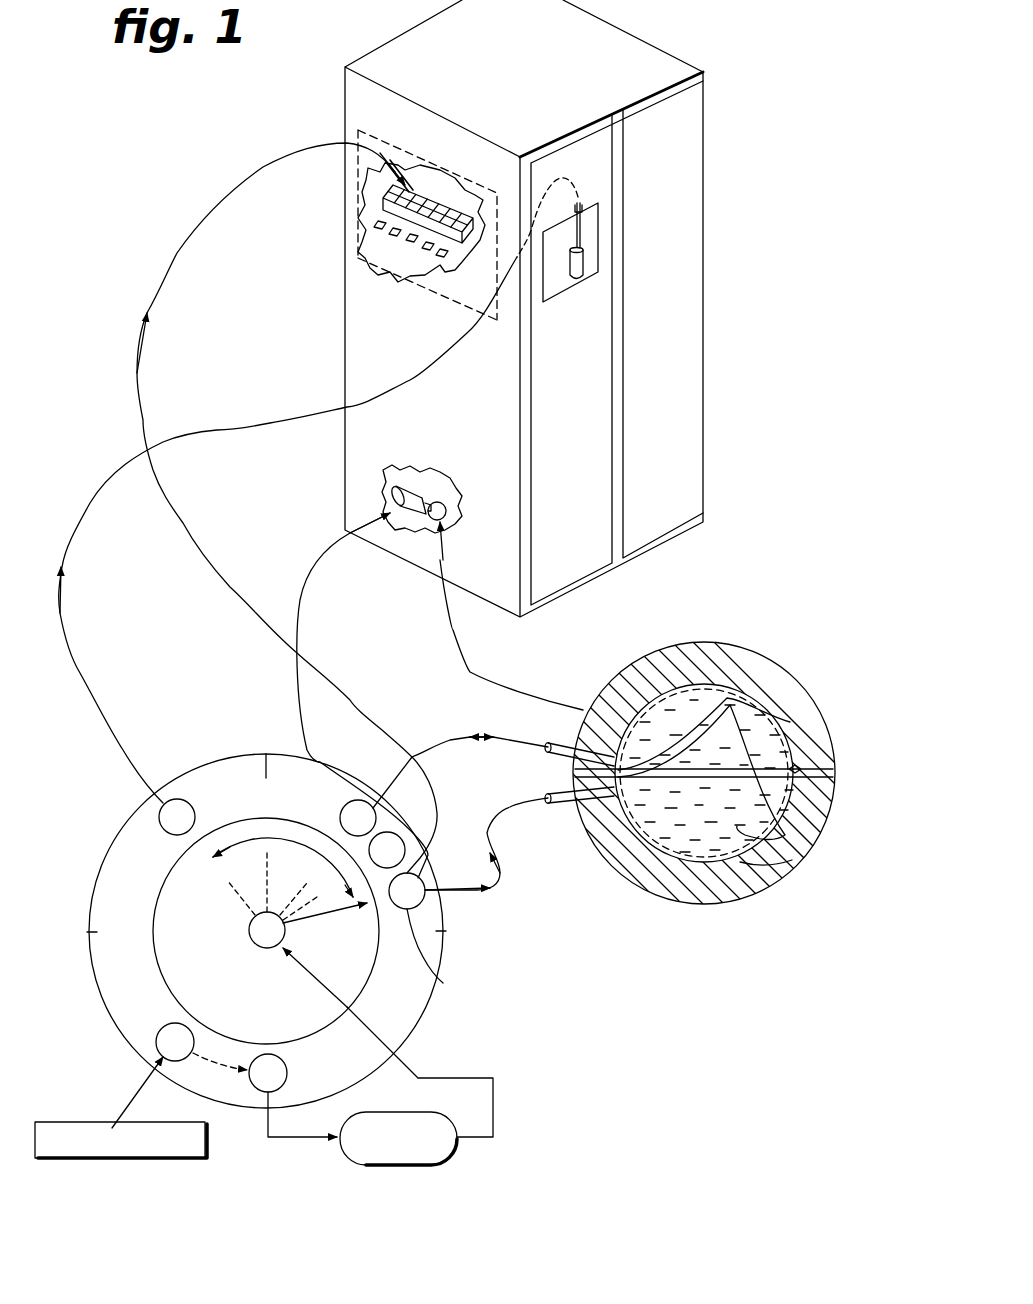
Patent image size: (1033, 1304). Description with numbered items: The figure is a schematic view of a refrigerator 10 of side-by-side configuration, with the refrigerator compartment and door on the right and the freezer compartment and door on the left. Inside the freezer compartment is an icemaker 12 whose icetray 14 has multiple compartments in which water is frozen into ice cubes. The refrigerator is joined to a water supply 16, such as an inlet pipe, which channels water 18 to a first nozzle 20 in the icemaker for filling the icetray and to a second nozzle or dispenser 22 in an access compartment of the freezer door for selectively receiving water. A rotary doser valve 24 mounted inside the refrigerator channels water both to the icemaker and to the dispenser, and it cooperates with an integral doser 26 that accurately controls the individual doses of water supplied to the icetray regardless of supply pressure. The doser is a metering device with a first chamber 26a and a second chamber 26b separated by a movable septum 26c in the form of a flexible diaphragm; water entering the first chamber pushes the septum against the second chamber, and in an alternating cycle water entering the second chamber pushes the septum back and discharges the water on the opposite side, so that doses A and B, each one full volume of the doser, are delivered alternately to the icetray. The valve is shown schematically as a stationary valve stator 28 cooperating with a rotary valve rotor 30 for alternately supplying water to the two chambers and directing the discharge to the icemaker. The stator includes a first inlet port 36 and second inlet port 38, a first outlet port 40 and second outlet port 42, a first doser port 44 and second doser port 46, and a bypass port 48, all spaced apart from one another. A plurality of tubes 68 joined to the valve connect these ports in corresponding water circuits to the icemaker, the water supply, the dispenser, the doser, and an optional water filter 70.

The refrigerator 10 is at (707, 318).
The icemaker 12 is at (387, 272).
The icetray 14 is at (457, 200).
The water supply 16 is at (207, 1153).
The water 18 is at (410, 170).
The first nozzle 20 is at (385, 170).
The dispenser 22 is at (580, 200).
The rotary doser valve 24 is at (427, 480).
The doser 26 is at (437, 500).
The first chamber 26a is at (670, 700).
The second chamber 26b is at (790, 853).
The septum 26c is at (800, 829).
The valve stator 28 is at (136, 913).
The valve rotor 30 is at (213, 906).
The first inlet port 36 is at (250, 942).
The second inlet port 38 is at (157, 1035).
The first outlet port 40 is at (405, 847).
The second outlet port 42 is at (190, 800).
The first doser port 44 is at (362, 801).
The second doser port 46 is at (443, 983).
The bypass port 48 is at (287, 1072).
The tubes 68 is at (63, 617).
The water filter 70 is at (453, 1153).